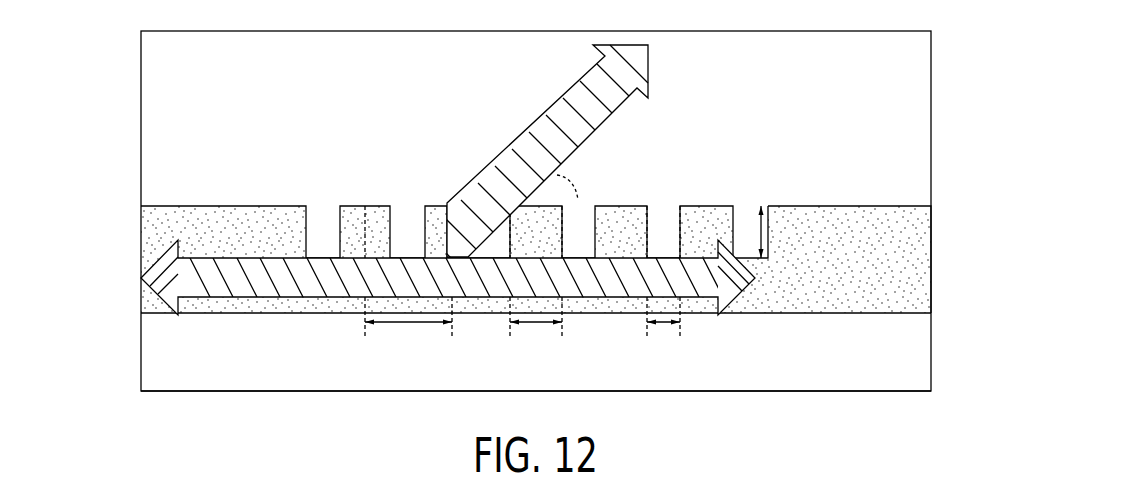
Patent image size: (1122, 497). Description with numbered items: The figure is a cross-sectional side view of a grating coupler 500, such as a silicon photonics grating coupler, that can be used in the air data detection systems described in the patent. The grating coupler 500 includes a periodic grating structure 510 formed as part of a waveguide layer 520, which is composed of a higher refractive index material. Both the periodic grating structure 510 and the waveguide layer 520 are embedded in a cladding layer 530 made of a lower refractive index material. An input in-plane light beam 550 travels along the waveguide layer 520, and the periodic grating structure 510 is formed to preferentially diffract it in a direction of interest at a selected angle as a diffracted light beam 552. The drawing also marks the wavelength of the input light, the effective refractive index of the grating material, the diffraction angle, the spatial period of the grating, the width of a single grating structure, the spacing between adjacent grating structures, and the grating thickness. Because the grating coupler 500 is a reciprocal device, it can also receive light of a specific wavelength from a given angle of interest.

The grating coupler 500 is at (968, 231).
The periodic grating structure 510 is at (430, 212).
The waveguide layer 520 is at (252, 215).
The cladding layer 530 is at (807, 375).
The input in-plane light beam 550 is at (293, 285).
The diffracted light beam 552 is at (595, 115).